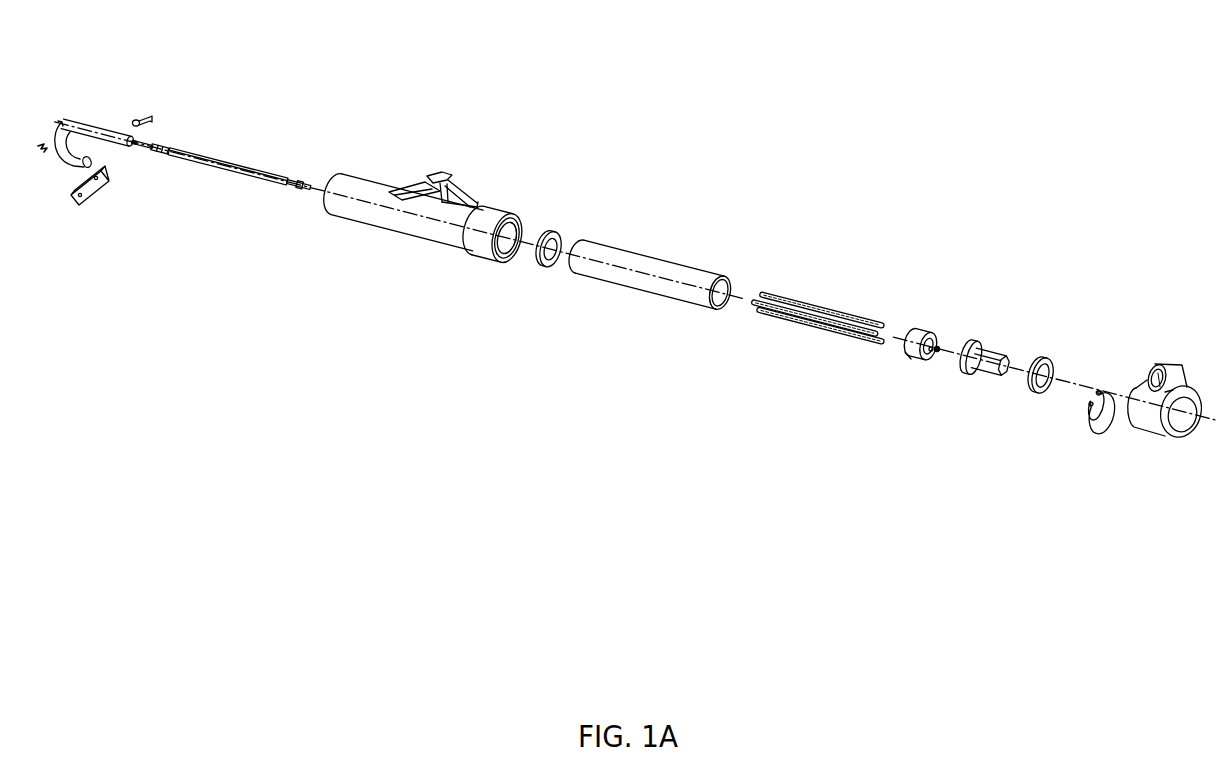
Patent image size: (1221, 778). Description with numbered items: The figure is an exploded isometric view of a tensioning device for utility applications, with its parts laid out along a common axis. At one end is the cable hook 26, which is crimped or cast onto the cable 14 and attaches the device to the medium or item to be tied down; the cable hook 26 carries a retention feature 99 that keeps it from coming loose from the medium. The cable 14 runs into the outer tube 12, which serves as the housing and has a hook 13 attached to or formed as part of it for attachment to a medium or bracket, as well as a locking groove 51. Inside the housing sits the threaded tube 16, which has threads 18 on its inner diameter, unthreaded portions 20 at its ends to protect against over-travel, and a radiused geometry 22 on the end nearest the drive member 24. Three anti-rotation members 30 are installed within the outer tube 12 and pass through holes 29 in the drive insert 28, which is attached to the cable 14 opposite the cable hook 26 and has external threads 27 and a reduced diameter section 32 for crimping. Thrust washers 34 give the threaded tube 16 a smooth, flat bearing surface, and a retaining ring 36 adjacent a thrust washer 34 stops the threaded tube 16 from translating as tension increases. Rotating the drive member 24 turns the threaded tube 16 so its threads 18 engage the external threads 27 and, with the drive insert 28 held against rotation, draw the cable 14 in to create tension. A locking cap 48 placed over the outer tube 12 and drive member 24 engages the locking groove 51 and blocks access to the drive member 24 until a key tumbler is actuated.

The outer tube 12 is at (385, 182).
The hook 13 is at (458, 185).
The cable 14 is at (247, 167).
The threaded tube 16 is at (642, 252).
The threads 18 is at (728, 288).
The unthreaded portions 20 is at (581, 279).
The radiused geometry 22 is at (713, 312).
The drive member 24 is at (992, 350).
The cable hook 26 is at (82, 120).
The external threads 27 is at (917, 329).
The drive insert 28 is at (908, 358).
The holes 29 is at (937, 347).
The anti-rotation member 30 is at (827, 306).
The reduced diameter section 32 is at (938, 349).
The thrust washers 34 is at (542, 266).
The retaining ring 36 is at (1097, 377).
The locking cap 48 is at (1177, 438).
The locking groove 51 is at (483, 249).
The retention feature 99 is at (82, 203).